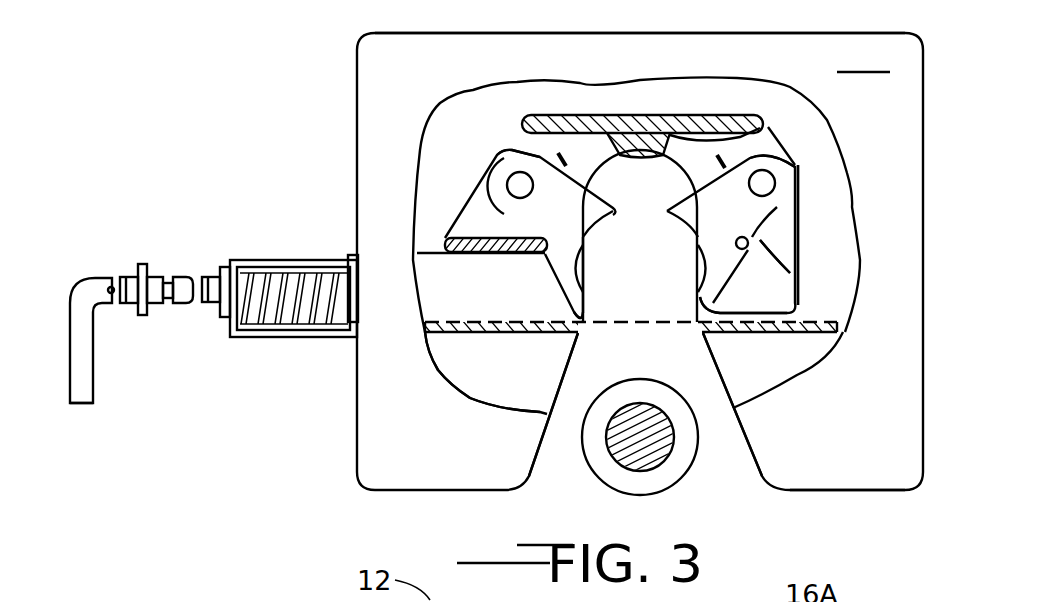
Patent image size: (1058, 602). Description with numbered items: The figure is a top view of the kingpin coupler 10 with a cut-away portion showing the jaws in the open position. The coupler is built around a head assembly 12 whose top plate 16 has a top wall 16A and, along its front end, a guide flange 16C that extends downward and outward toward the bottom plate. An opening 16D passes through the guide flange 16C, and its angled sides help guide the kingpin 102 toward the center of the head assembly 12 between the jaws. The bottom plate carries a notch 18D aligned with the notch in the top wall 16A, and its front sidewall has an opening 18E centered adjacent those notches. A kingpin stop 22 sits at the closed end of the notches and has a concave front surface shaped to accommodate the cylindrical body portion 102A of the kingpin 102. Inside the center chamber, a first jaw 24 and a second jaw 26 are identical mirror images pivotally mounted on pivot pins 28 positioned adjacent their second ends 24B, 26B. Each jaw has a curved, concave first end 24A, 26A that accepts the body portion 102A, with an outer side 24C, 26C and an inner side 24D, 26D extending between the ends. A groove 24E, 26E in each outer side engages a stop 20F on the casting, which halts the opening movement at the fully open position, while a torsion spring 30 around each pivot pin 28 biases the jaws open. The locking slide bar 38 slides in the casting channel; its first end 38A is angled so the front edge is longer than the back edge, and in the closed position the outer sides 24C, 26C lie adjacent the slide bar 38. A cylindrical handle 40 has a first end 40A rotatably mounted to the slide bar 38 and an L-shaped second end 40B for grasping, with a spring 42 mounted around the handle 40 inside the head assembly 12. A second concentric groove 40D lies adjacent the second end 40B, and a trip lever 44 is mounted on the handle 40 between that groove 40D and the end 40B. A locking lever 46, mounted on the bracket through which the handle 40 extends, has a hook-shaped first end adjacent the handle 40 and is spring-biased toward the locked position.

The kingpin coupler 10 is at (352, 91).
The head assembly 12 is at (591, 31).
The top plate 16 is at (903, 62).
The top wall 16A is at (863, 57).
The guide flange 16C is at (868, 463).
The opening 16D is at (712, 443).
The notch 18D is at (768, 127).
The opening 18E is at (704, 326).
The stop 20F is at (798, 268).
The kingpin stop 22 is at (640, 116).
The first jaw 24 is at (480, 192).
The first end of first jaw 24A is at (570, 283).
The second end of first jaw 24B is at (500, 170).
The outer side of first jaw 24C is at (548, 271).
The inner side of first jaw 24D is at (612, 186).
The groove of first jaw 24E is at (536, 252).
The second jaw 26 is at (782, 207).
The first end of second jaw 26A is at (695, 215).
The second end of second jaw 26B is at (768, 160).
The outer side of second jaw 26C is at (760, 270).
The inner side of second jaw 26D is at (688, 188).
The groove of second jaw 26E is at (778, 235).
The pivot pin 28 is at (770, 183).
The spring 30 is at (558, 152).
The locking slide bar 38 is at (448, 333).
The first end of locking slide bar 38A is at (553, 334).
The handle 40 is at (95, 278).
The first end of handle 40A is at (342, 300).
The second end of handle 40B is at (83, 403).
The second concentric groove 40D is at (167, 277).
The spring 42 is at (268, 303).
The trip lever 44 is at (143, 262).
The locking lever 46 is at (225, 265).
The kingpin 102 is at (665, 468).
The body portion 102A is at (603, 438).